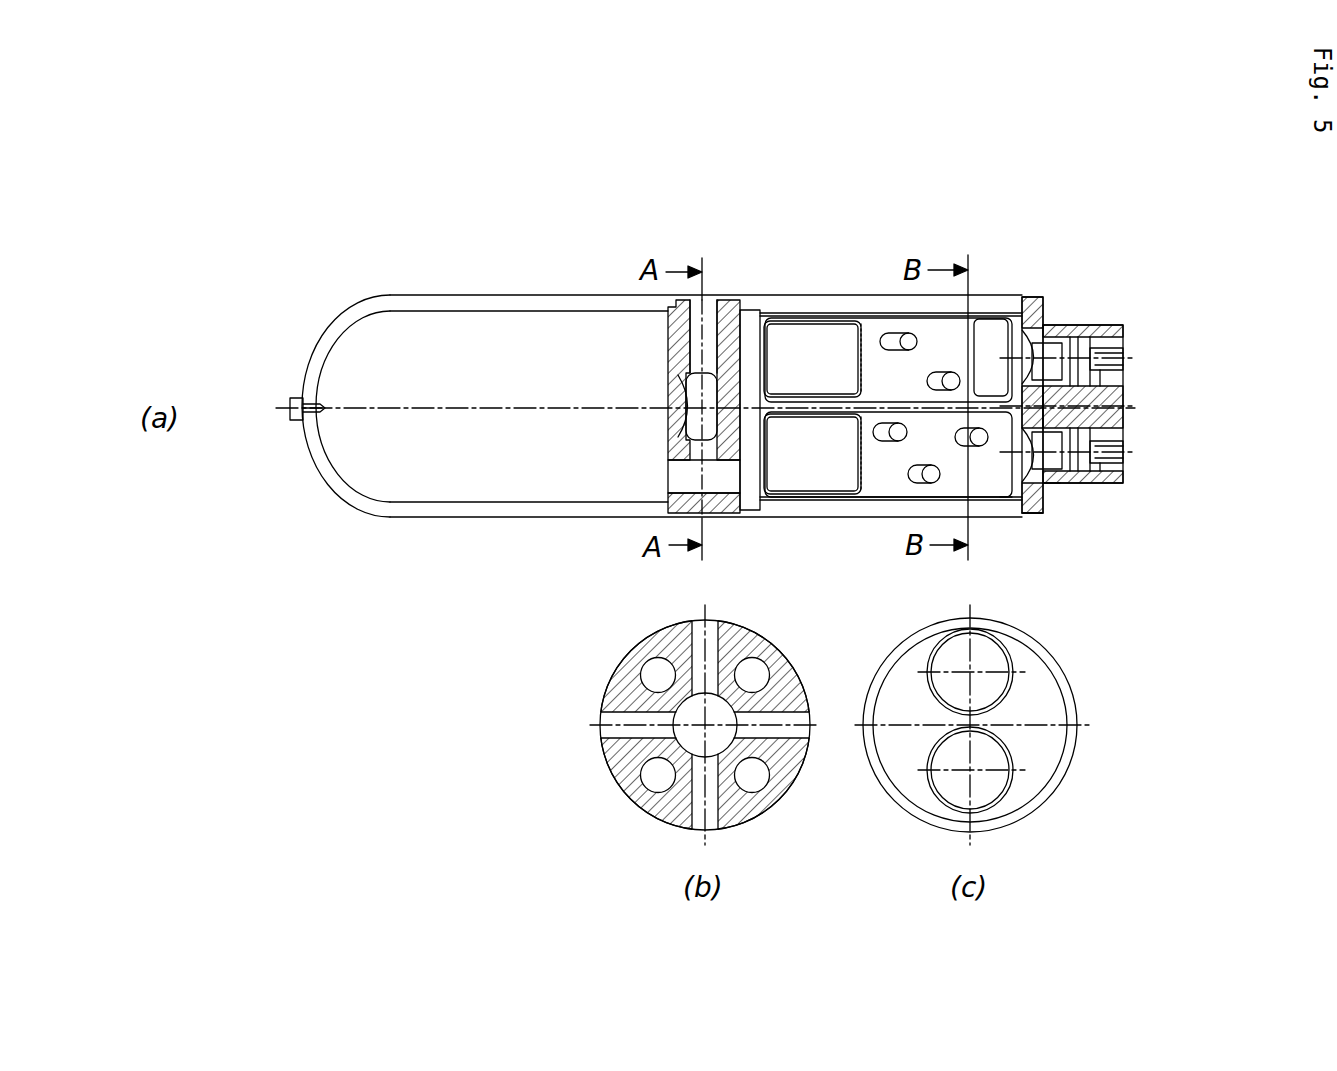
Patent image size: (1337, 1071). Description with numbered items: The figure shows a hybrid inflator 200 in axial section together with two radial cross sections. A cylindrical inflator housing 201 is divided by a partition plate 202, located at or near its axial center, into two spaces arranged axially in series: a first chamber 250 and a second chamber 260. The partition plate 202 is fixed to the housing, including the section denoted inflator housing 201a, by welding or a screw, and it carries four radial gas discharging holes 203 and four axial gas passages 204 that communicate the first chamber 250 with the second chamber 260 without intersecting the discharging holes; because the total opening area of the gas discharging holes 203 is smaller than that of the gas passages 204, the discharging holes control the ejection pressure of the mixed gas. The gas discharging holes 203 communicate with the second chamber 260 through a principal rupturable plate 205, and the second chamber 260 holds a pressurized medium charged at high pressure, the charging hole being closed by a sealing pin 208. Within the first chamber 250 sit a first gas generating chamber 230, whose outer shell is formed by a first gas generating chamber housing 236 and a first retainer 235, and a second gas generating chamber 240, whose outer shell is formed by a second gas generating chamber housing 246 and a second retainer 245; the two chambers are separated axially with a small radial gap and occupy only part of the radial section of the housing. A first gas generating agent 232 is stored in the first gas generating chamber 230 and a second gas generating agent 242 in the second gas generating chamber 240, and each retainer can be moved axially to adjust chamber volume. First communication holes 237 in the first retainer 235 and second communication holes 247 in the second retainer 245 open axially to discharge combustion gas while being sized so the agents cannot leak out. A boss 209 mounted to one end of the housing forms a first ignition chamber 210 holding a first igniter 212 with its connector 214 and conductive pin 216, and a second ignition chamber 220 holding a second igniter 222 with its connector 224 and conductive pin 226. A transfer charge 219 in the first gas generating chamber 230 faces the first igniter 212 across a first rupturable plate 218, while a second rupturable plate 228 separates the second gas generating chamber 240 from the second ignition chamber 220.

The hybrid inflator 200 is at (582, 272).
The inflator housing 201 is at (420, 296).
The inflator housing section 201a is at (830, 312).
The partition plate 202 is at (728, 300).
The gas discharging holes 203 is at (704, 300).
The gas passages 204 is at (725, 490).
The principal rupturable plate 205 is at (672, 480).
The sealing pin 208 is at (291, 421).
The boss 209 is at (1036, 496).
The first ignition chamber 210 is at (1128, 345).
The first igniter 212 is at (1066, 325).
The connector 214 is at (1122, 385).
The conductive pin 216 is at (1125, 328).
The first rupturable plate 218 is at (1040, 312).
The transfer charge 219 is at (986, 312).
The second ignition chamber 220 is at (1128, 432).
The second igniter 222 is at (1058, 488).
The connector 224 is at (1113, 485).
The conductive pin 226 is at (1120, 462).
The second rupturable plate 228 is at (1010, 492).
The first gas generating chamber 230 is at (970, 355).
The first gas generating agent 232 is at (900, 312).
The first retainer 235 is at (832, 300).
The first gas generating chamber housing 236 is at (846, 312).
The first communication holes 237 is at (857, 340).
The second gas generating chamber 240 is at (1000, 490).
The second gas generating agent 242 is at (925, 485).
The second retainer 245 is at (825, 497).
The second gas generating chamber housing 246 is at (862, 497).
The second communication holes 247 is at (857, 447).
The first chamber 250 is at (850, 395).
The second chamber 260 is at (525, 381).